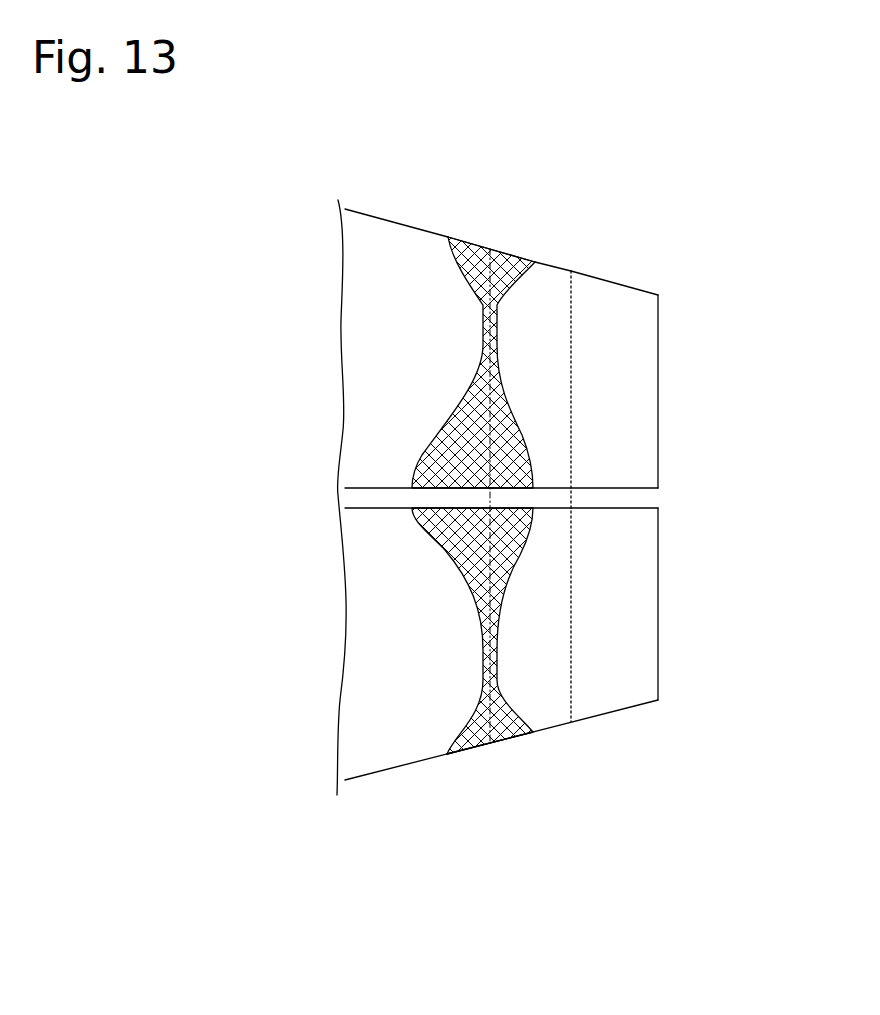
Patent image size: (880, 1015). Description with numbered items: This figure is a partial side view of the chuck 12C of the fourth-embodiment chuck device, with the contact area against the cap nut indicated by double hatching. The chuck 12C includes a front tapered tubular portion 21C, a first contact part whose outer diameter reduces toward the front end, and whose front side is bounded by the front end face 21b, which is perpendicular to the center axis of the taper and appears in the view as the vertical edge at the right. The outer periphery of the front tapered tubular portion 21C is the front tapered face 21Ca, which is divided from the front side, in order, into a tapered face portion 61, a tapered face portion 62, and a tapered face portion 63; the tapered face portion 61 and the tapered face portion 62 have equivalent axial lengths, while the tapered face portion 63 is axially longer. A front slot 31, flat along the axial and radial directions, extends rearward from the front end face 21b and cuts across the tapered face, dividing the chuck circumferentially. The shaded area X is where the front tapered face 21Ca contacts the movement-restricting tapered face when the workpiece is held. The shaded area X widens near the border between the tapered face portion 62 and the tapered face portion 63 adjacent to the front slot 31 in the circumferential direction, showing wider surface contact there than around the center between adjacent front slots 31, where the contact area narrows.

The chuck 12C is at (662, 236).
The tapered face portion 63 is at (388, 221).
The tapered face portion 62 is at (556, 266).
The tapered face portion 61 is at (615, 283).
The front end face 21b is at (660, 358).
The front tapered tubular portion 21C is at (440, 236).
The front tapered face 21Ca is at (408, 765).
The front slot 31 is at (608, 489).
The shaded area X is at (535, 531).